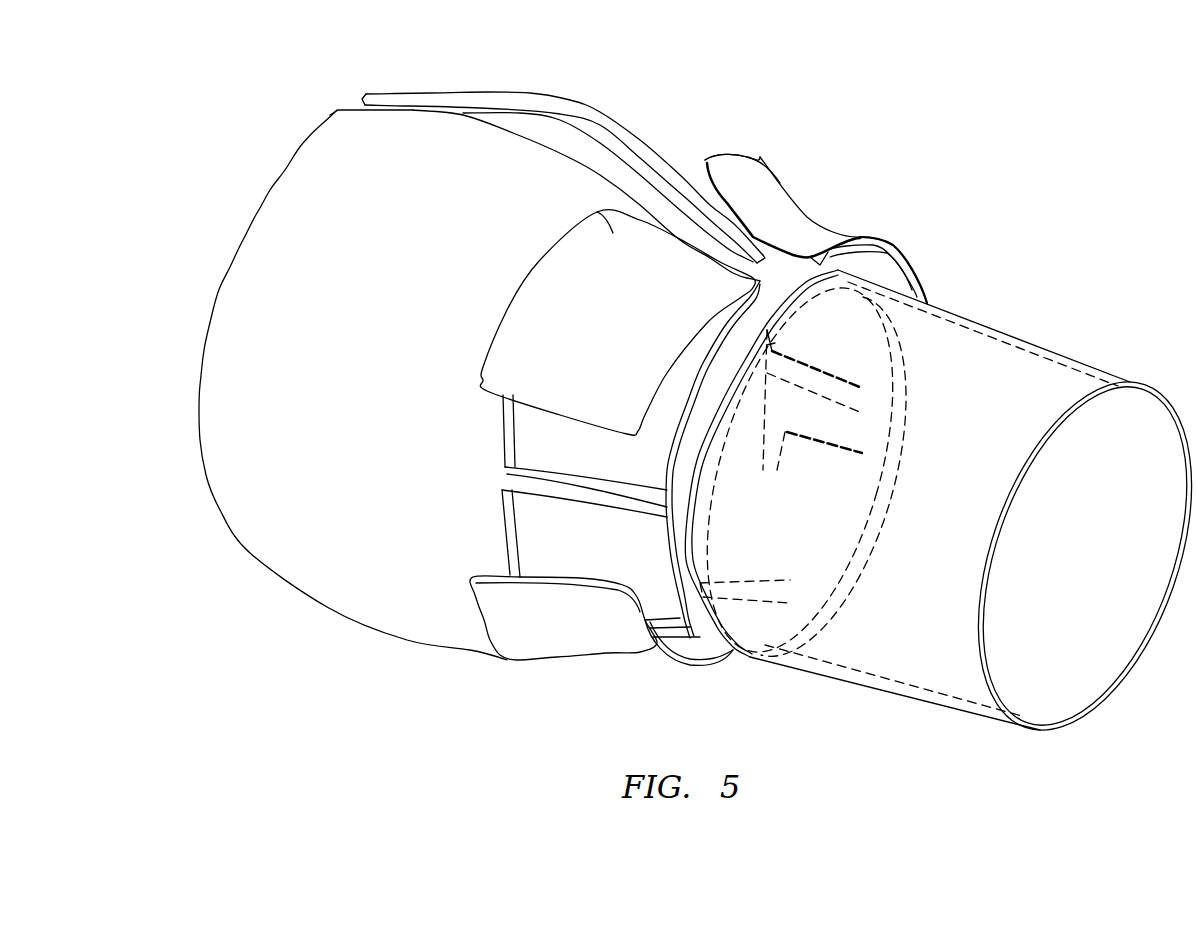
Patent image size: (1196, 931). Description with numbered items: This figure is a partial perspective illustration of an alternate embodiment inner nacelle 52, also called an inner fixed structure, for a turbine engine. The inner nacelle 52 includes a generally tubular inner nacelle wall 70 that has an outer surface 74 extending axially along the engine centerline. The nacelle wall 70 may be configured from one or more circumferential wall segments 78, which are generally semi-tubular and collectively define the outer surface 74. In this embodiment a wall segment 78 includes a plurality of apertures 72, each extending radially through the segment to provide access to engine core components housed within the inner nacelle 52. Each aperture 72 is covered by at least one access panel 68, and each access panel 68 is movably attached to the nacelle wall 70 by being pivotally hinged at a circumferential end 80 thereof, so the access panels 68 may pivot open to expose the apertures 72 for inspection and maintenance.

The inner nacelle 52 is at (931, 144).
The access panel 68 is at (613, 233).
The inner nacelle wall 70 is at (452, 396).
The aperture 72 is at (857, 360).
The outer surface 74 is at (243, 273).
The circumferential wall segment 78 is at (573, 101).
The circumferential end 80 is at (693, 235).